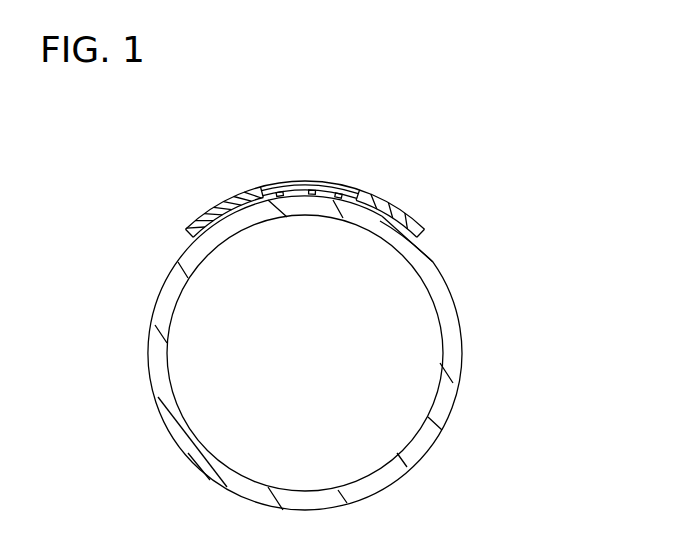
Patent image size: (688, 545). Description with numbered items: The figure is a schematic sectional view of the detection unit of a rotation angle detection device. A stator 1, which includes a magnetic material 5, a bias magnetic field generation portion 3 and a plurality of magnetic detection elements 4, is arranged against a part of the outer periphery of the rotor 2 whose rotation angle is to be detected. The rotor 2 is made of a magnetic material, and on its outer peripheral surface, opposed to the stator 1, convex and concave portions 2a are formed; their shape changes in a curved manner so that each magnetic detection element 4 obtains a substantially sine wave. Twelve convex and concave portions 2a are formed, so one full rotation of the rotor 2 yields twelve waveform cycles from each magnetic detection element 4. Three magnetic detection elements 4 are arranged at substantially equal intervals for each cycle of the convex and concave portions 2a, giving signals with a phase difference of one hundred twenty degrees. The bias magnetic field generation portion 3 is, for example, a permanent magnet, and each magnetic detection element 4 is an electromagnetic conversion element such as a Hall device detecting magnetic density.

The stator 1 is at (387, 188).
The rotor 2 is at (450, 328).
The convex and concave portions 2a is at (435, 262).
The bias magnetic field generation portion 3 is at (275, 190).
The magnetic detection elements 4 is at (312, 188).
The magnetic material 5 is at (220, 203).